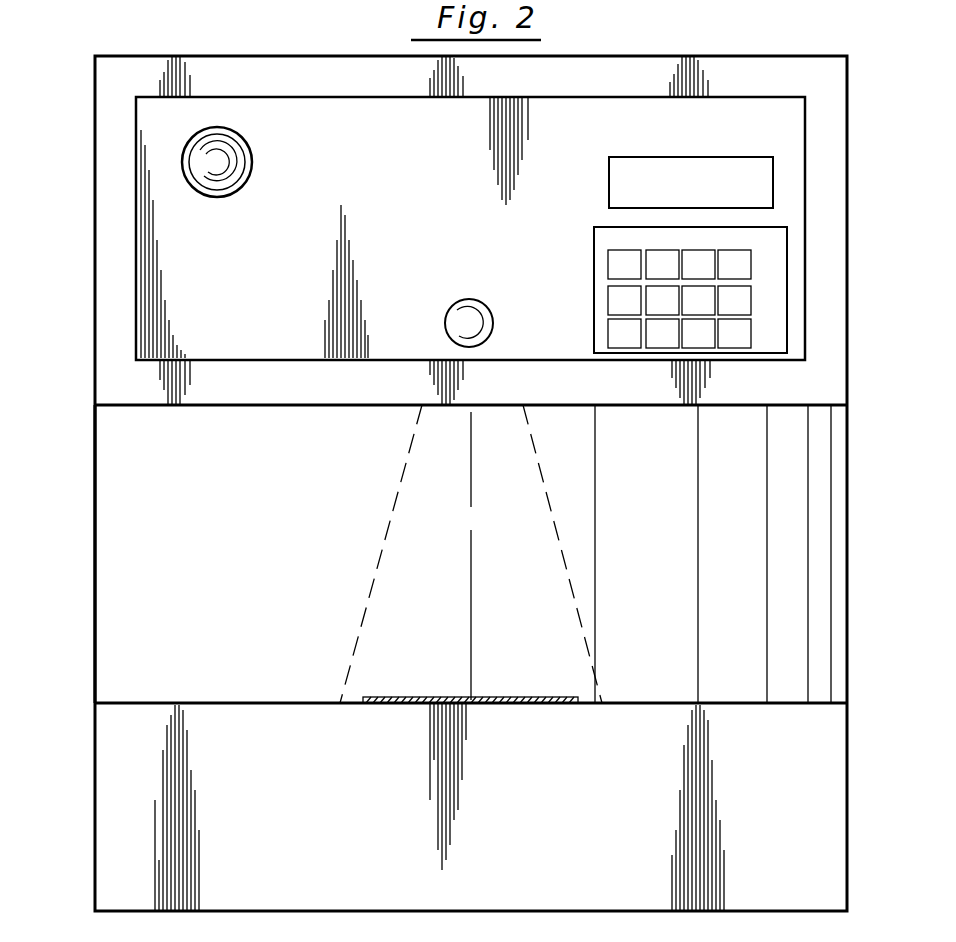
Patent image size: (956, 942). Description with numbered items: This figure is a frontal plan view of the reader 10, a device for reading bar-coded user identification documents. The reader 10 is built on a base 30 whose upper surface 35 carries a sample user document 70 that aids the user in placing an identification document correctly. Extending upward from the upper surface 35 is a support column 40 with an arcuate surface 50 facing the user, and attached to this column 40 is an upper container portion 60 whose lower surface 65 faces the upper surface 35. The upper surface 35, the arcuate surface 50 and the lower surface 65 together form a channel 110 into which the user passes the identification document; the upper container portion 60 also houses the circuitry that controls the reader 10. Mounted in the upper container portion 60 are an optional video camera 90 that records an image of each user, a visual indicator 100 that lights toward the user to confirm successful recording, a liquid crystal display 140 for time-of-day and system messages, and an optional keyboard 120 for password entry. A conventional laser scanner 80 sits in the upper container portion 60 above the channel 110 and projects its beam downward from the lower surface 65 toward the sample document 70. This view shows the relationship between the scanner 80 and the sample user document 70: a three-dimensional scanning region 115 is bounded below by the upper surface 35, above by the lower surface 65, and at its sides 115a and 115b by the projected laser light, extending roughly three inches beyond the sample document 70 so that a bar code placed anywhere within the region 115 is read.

The reader 10 is at (95, 113).
The upper container portion 60 is at (95, 282).
The video camera 90 is at (233, 168).
The visual indicator 100 is at (461, 312).
The display 140 is at (748, 157).
The keyboard 120 is at (594, 298).
The arcuate surface 50 is at (130, 492).
The lower surface 65 is at (250, 405).
The support column 40 is at (95, 597).
The channel 110 is at (732, 521).
The scanner 80 is at (421, 407).
The three-dimensional scanning region 115 is at (449, 554).
The side of scanning region 115a is at (357, 597).
The side of scanning region 115b is at (604, 554).
The sample user document 70 is at (403, 697).
The upper surface 35 is at (165, 703).
The base 30 is at (130, 816).